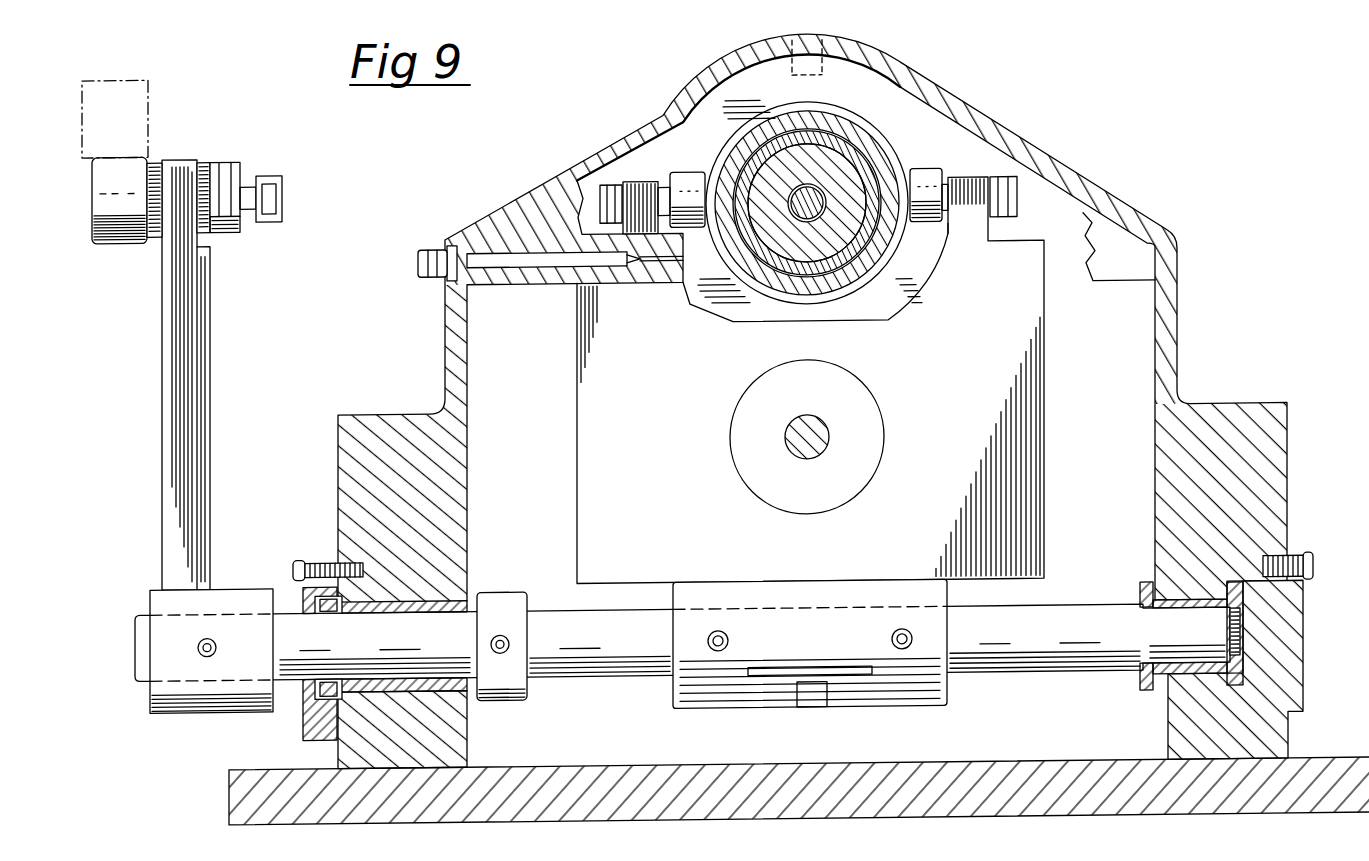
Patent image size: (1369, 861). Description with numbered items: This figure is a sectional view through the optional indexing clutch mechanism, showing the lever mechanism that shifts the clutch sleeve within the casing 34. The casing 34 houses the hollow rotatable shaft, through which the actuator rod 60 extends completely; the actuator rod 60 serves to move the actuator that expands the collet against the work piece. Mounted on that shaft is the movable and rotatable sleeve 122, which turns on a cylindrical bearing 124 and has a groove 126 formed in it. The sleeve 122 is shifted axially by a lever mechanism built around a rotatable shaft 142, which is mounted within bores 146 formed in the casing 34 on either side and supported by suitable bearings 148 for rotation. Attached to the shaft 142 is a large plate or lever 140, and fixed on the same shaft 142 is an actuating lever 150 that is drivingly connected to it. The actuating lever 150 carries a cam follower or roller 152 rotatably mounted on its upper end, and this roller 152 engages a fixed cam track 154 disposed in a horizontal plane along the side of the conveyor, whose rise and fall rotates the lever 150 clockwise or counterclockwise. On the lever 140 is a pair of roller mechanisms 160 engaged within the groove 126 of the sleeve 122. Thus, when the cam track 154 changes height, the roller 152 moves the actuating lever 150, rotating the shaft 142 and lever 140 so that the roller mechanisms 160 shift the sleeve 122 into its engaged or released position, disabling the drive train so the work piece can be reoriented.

The casing 34 is at (1275, 454).
The actuator rod 60 is at (807, 217).
The sleeve 122 is at (743, 151).
The cylindrical bearing 124 is at (787, 133).
The groove 126 is at (858, 112).
The lever 140 is at (592, 439).
The shaft 142 is at (586, 675).
The bores 146 is at (412, 597).
The bearings 148 is at (425, 688).
The actuating lever 150 is at (210, 358).
The cam follower 152 is at (108, 237).
The cam track 154 is at (128, 150).
The roller mechanisms 160 is at (682, 178).